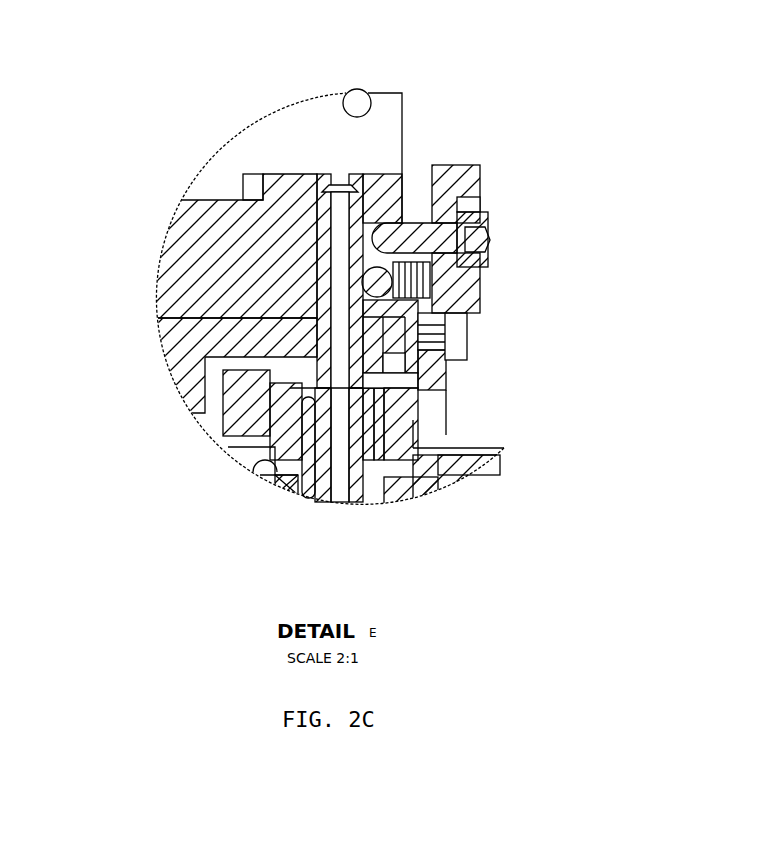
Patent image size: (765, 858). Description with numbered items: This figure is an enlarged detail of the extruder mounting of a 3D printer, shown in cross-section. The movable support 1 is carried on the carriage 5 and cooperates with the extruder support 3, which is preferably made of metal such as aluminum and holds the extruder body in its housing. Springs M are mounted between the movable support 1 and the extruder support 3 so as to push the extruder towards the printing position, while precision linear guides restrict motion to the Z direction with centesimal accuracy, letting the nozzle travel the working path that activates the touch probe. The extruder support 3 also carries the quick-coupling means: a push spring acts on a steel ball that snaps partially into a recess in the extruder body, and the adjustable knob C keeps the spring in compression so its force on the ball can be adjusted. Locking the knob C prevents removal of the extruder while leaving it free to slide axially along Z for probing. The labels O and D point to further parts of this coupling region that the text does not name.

The movable support 1 is at (218, 410).
The extruder support 3 is at (205, 238).
The carriage 5 is at (190, 341).
The adjustable knob C is at (461, 160).
The screw / plunger bar O is at (483, 287).
The spacer block D is at (445, 325).
The springs M is at (445, 392).